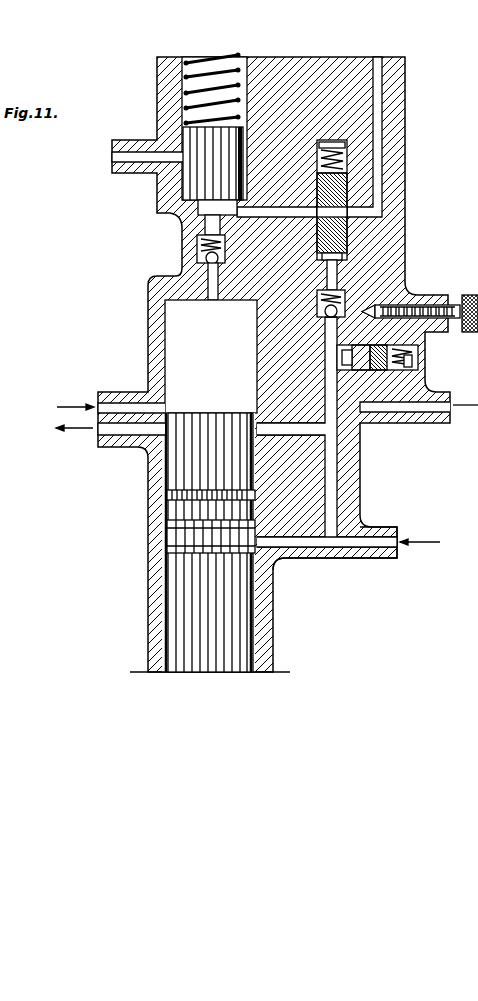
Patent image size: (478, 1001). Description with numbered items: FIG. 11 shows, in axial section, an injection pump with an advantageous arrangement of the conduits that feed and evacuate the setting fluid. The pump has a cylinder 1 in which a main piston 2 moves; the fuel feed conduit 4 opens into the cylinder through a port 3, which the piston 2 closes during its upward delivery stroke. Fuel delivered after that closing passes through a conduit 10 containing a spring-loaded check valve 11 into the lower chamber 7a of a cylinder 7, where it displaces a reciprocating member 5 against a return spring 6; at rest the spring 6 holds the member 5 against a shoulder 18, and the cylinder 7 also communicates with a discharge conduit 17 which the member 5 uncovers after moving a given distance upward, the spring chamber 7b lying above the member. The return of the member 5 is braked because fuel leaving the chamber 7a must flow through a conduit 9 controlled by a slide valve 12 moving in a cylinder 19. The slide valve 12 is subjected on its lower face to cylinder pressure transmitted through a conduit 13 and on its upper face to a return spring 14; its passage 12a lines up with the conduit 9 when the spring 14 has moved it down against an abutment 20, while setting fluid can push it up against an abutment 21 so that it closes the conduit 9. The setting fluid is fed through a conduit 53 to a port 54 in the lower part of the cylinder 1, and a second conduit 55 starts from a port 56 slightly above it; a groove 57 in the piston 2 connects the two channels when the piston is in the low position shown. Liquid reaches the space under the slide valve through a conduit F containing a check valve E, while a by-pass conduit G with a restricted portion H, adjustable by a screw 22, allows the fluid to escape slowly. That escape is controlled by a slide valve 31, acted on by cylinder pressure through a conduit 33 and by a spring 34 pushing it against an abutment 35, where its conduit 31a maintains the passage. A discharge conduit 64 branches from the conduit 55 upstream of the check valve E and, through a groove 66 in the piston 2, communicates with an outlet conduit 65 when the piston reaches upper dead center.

The cylinder 1 is at (167, 322).
The main piston 2 is at (217, 433).
The port 3 is at (167, 408).
The fuel feed conduit 4 is at (118, 408).
The reciprocating member 5 is at (200, 178).
The return spring 6 is at (190, 93).
The cylinder 7 is at (200, 195).
The lower chamber 7a is at (195, 207).
The spring chamber 7b is at (188, 65).
The conduit 9 is at (378, 80).
The conduit 10 is at (213, 285).
The check valve 11 is at (206, 260).
The slide valve 12 is at (335, 192).
The passage 12a is at (333, 213).
The conduit 13 is at (328, 267).
The return spring 14 is at (340, 168).
The discharge conduit 17 is at (133, 156).
The shoulder 18 is at (197, 240).
The cylinder 19 is at (342, 155).
The abutment 20 is at (345, 256).
The abutment 21 is at (347, 141).
The screw 22 is at (452, 305).
The slide valve 31 is at (395, 372).
The conduit 31a is at (420, 343).
The conduit 33 is at (340, 357).
The spring 34 is at (418, 368).
The abutment 35 is at (347, 372).
The conduit 53 is at (377, 542).
The port 54 is at (275, 560).
The second conduit 55 is at (332, 482).
The port 56 is at (260, 523).
The groove 57 is at (170, 535).
The discharge conduit 64 is at (297, 428).
The outlet conduit 65 is at (130, 428).
The groove 66 is at (170, 493).
The check-valve E is at (318, 310).
The conduit F is at (365, 273).
The by-pass conduit G is at (332, 322).
The restricted portion H is at (350, 278).